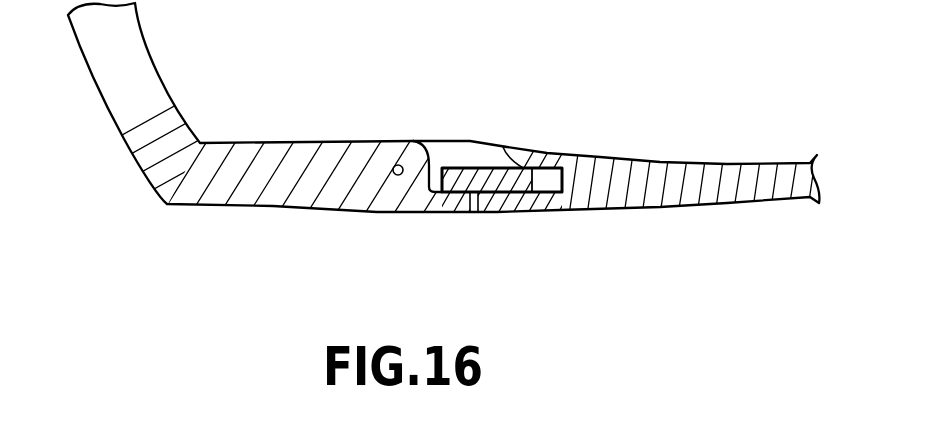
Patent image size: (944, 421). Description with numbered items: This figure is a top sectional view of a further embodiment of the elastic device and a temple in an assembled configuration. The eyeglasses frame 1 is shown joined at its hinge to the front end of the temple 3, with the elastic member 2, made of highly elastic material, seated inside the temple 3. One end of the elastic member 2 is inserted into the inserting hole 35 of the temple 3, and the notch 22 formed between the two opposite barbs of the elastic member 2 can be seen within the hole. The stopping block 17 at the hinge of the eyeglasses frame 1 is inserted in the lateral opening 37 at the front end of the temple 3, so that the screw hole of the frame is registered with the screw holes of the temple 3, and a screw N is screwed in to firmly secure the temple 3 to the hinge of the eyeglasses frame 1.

The eyeglasses frame 1 is at (226, 221).
The elastic member 2 is at (482, 176).
The temple 3 is at (737, 132).
The stopping block 17 is at (455, 207).
The notch 22 is at (551, 172).
The inserting hole 35 is at (504, 140).
The lateral opening 37 is at (473, 212).
The screw N is at (397, 165).